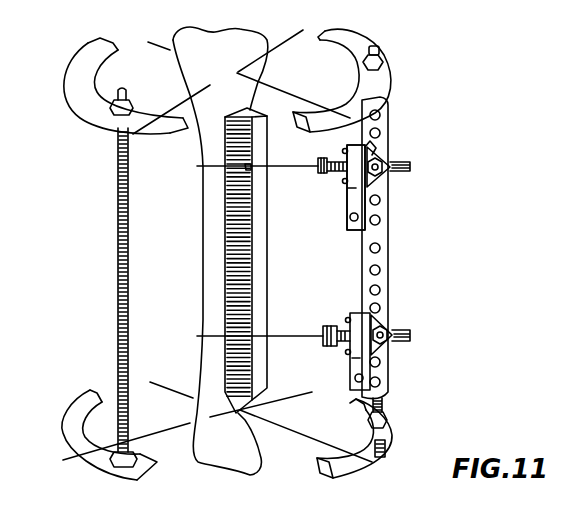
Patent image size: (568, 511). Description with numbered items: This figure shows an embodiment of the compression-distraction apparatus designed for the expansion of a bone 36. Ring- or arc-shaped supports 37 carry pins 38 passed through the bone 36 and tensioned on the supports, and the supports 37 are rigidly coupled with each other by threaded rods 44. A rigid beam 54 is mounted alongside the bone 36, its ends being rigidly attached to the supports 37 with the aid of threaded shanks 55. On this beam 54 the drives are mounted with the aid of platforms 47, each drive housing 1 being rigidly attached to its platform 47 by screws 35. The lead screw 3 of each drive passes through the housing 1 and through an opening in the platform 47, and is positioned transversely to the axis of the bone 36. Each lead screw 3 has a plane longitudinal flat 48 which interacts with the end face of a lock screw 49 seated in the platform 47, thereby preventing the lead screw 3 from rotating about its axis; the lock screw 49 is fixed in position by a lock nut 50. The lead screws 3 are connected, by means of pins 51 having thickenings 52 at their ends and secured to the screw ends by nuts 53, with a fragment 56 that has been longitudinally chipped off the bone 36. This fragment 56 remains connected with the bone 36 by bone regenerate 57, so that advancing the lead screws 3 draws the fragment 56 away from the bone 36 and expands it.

The housing 1 is at (353, 208).
The lead screw 3 is at (398, 158).
The screws 35 is at (345, 355).
The bone 36 is at (215, 218).
The supports 37 is at (82, 85).
The pins 38 is at (298, 56).
The threaded rods 44 is at (116, 323).
The platforms 47 is at (372, 150).
The plane longitudinal flat 48 is at (410, 167).
The lock screw 49 is at (386, 325).
The lock nut 50 is at (388, 188).
The pins 51 is at (291, 170).
The thickenings 52 is at (250, 166).
The nuts 53 is at (327, 176).
The rigid beam 54 is at (387, 242).
The threaded shanks 55 is at (380, 48).
The fragment 56 is at (257, 294).
The bone regenerate 57 is at (240, 242).